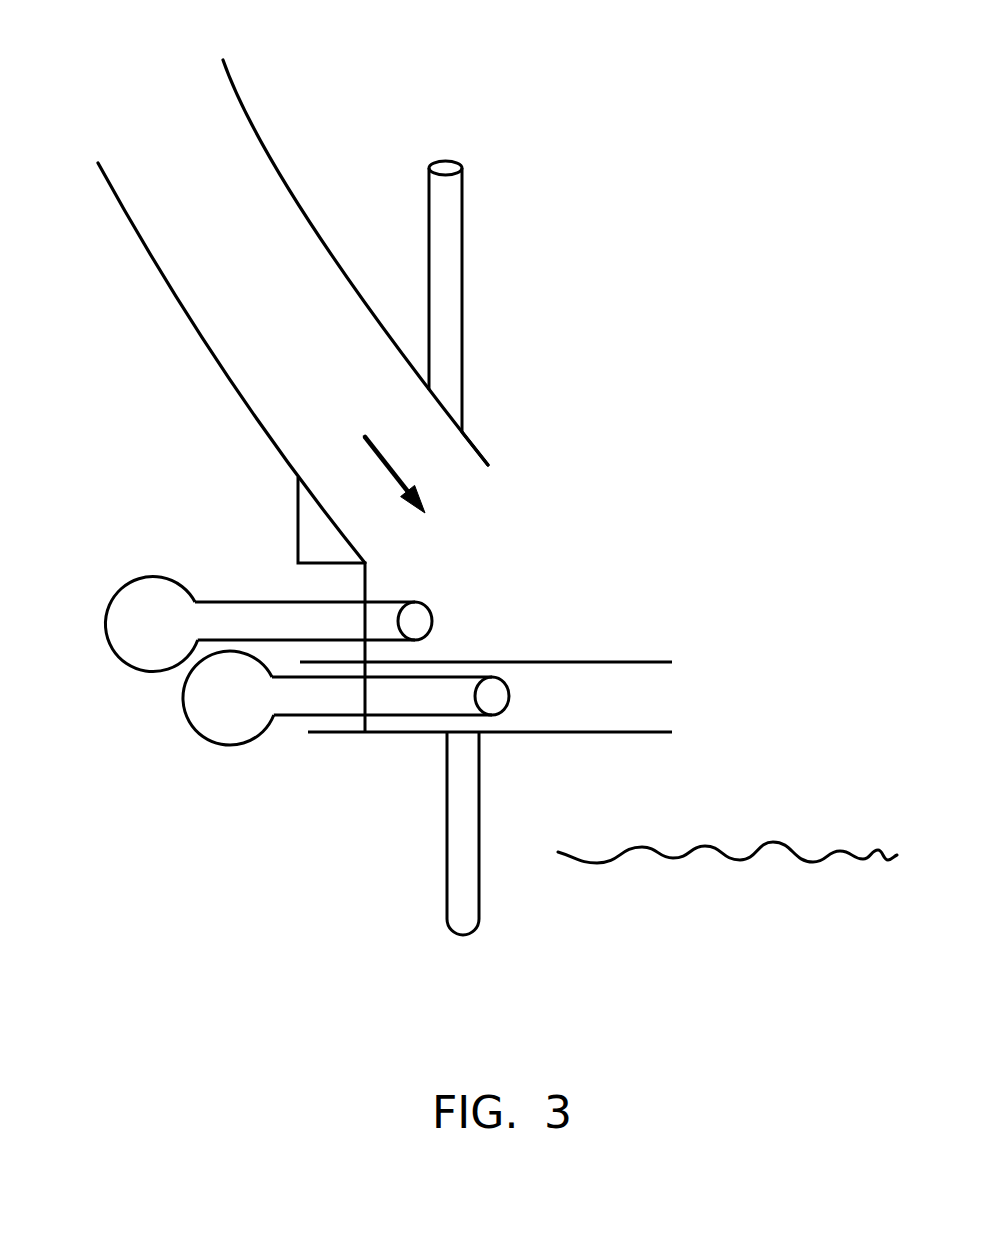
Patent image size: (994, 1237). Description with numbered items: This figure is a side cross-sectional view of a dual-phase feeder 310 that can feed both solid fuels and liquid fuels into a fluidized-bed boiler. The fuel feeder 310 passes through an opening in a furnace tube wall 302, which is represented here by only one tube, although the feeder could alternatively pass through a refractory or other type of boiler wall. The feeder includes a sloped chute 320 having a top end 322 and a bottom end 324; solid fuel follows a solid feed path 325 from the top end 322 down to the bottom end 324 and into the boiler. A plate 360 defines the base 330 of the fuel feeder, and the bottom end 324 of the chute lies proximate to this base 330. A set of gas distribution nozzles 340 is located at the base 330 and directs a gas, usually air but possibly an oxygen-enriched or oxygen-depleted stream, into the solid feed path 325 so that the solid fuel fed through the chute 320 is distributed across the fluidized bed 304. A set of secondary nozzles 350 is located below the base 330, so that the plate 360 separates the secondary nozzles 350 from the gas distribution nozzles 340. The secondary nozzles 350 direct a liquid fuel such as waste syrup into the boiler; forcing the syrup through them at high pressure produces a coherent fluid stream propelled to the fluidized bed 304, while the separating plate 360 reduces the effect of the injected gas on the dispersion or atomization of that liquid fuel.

The furnace tube wall 302 is at (442, 260).
The fluidized bed 304 is at (780, 902).
The dual-phase feeder 310 is at (168, 282).
The sloped chute 320 is at (240, 398).
The top end 322 is at (277, 157).
The bottom end 324 is at (475, 447).
The solid feed path 325 is at (367, 445).
The base 330 is at (622, 662).
The gas distribution nozzles 340 is at (303, 618).
The secondary nozzles 350 is at (310, 697).
The plate 360 is at (465, 662).